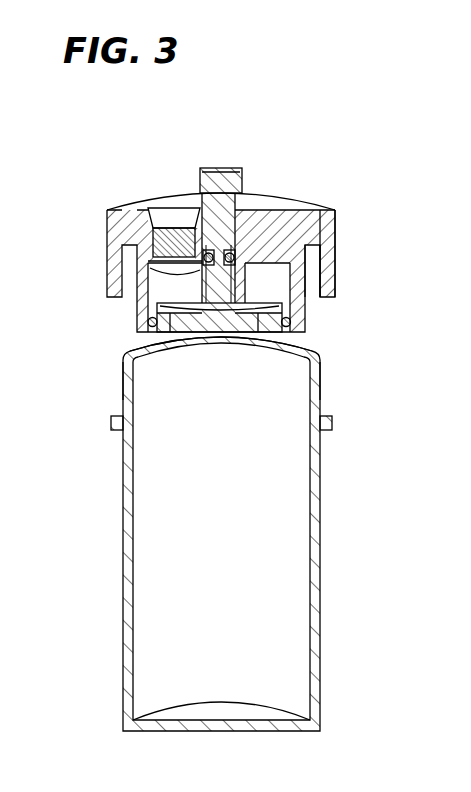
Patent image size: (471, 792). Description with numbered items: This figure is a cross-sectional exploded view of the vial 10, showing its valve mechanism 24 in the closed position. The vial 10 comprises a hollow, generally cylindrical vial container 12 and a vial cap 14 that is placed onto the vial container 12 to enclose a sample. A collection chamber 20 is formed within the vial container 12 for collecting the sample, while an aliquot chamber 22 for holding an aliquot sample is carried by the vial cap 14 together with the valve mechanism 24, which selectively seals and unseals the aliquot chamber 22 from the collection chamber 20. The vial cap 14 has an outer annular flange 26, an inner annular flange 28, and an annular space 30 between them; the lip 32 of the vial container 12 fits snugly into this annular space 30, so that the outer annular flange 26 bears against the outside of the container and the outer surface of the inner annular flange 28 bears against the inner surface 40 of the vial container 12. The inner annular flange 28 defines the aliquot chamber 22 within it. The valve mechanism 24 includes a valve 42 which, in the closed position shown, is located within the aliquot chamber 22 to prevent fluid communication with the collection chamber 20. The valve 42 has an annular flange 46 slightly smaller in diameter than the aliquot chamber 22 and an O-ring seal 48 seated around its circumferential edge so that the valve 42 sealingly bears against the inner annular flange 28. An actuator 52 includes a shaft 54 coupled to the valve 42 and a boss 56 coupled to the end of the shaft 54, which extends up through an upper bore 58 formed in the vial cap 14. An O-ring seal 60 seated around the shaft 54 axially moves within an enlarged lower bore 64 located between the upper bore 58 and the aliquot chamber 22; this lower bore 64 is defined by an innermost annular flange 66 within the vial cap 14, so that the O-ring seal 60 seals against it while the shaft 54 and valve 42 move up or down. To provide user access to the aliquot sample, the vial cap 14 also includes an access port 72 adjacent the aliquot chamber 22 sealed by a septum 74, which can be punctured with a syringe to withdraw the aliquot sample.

The vial 10 is at (50, 192).
The vial container 12 is at (326, 487).
The vial cap 14 is at (294, 194).
The collection chamber 20 is at (146, 497).
The aliquot chamber 22 is at (169, 299).
The valve mechanism 24 is at (218, 316).
The outer annular flange 26 is at (328, 270).
The inner annular flange 28 is at (291, 322).
The annular space 30 is at (310, 253).
The lip 32 is at (317, 367).
The inner surface 40 is at (310, 388).
The valve 42 is at (258, 333).
The annular flange 46 is at (180, 323).
The O-ring seal 48 is at (148, 322).
The actuator 52 is at (235, 166).
The shaft 54 is at (290, 200).
The boss 56 is at (213, 168).
The upper bore 58 is at (240, 203).
The O-ring seal 60 is at (245, 292).
The lower bore 64 is at (175, 265).
The innermost annular flange 66 is at (262, 318).
The access port 72 is at (168, 215).
The septum 74 is at (152, 242).